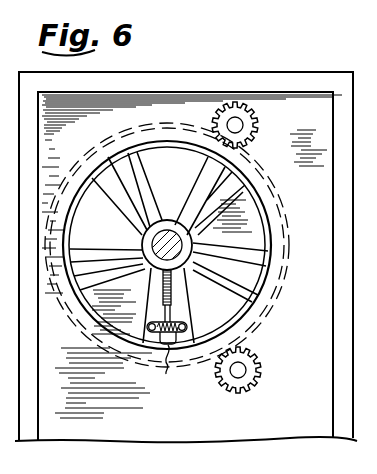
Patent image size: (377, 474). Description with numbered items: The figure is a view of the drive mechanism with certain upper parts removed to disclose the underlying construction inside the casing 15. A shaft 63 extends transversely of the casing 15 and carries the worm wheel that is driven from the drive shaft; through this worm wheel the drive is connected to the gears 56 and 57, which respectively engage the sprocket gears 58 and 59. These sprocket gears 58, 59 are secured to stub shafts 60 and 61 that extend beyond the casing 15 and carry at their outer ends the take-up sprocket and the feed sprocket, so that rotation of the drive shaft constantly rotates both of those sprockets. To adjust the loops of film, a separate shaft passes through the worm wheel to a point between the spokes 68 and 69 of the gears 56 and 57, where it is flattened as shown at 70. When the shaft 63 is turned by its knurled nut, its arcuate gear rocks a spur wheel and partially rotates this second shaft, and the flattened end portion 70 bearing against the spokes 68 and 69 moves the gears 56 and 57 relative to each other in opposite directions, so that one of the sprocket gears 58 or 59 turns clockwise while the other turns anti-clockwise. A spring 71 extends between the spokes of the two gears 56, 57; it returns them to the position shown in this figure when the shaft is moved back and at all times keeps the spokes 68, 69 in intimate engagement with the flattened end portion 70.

The casing 15 is at (186, 257).
The gear 56 is at (208, 357).
The gear 57 is at (230, 160).
The sprocket gear 58 is at (253, 382).
The sprocket gear 59 is at (248, 132).
The stub shaft 60 is at (238, 371).
The stub shaft 61 is at (236, 120).
The shaft 63 is at (167, 233).
The spoke 68 is at (236, 278).
The spoke 69 is at (252, 254).
The flattened end portion 70 is at (164, 289).
The spring 71 is at (188, 318).